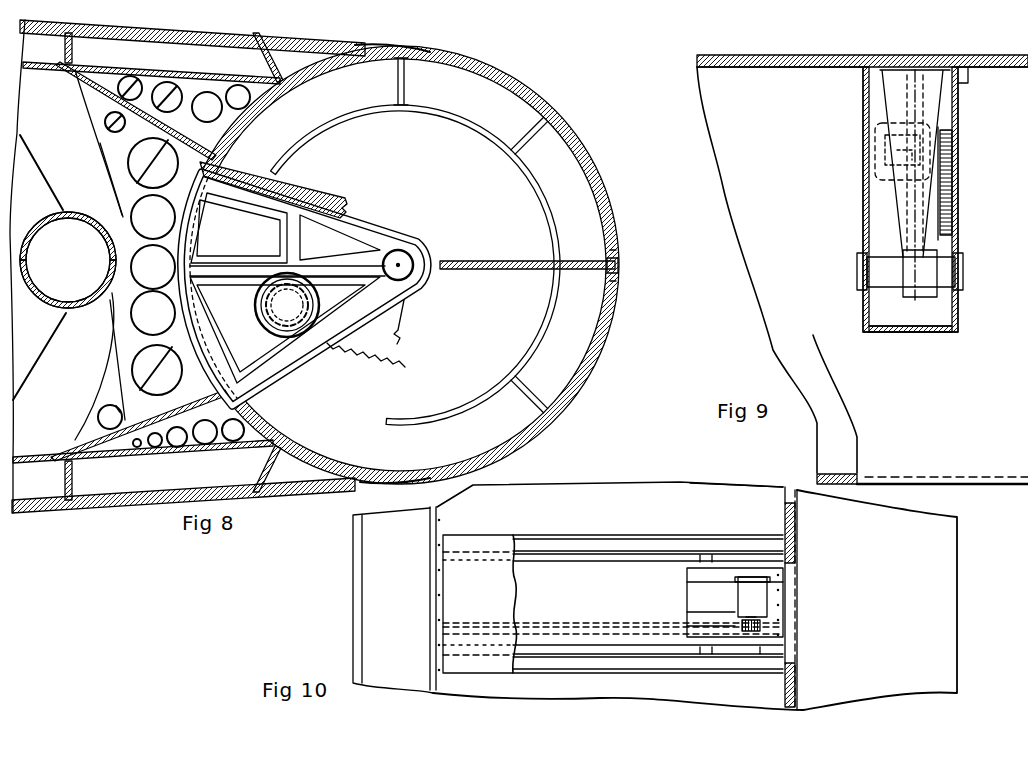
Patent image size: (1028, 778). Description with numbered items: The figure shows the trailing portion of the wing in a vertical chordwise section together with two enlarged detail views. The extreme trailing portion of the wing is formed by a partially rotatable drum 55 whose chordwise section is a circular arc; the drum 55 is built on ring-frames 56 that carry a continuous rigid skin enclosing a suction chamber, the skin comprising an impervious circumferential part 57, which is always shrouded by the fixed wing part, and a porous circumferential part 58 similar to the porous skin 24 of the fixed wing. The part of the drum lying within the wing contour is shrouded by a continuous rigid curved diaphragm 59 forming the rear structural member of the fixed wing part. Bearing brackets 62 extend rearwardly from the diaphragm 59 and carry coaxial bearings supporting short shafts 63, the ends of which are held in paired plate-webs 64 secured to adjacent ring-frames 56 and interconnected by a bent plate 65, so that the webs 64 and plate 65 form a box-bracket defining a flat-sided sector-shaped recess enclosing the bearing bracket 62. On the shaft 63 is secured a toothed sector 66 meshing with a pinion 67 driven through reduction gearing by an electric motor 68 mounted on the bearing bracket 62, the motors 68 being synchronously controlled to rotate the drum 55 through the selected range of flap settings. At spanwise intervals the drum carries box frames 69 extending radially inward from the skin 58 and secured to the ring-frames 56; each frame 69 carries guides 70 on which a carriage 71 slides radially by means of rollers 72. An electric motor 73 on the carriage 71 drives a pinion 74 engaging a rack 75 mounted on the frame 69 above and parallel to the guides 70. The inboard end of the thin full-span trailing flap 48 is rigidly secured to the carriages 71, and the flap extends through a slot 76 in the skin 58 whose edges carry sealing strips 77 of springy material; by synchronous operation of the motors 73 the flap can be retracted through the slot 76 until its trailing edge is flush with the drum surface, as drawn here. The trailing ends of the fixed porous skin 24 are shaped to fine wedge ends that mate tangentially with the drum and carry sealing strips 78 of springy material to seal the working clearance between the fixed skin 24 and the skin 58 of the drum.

In FIG. 8, the porous skin 24 is at (355, 40).
In FIG. 8, the trailing flap 48 is at (465, 258).
In FIG. 10, the trailing flap 48 is at (930, 552).
In FIG. 8, the drum 55 is at (598, 152).
In FIG. 8, the ring-frames 56 is at (333, 133).
In FIG. 10, the ring-frames 56 is at (437, 518).
In FIG. 9, the impervious circumferential skin part 57 is at (790, 69).
In FIG. 8, the porous circumferential skin part 58 is at (530, 102).
In FIG. 10, the porous circumferential skin part 58 is at (785, 518).
In FIG. 8, the curved diaphragm 59 is at (187, 328).
In FIG. 9, the curved diaphragm 59 is at (795, 56).
In FIG. 8, the bearing bracket 62 is at (245, 267).
In FIG. 9, the bearing bracket 62 is at (932, 80).
In FIG. 9, the short shaft 63 is at (872, 268).
In FIG. 9, the plate-webs 64 is at (862, 213).
In FIG. 8, the bent plate 65 is at (377, 213).
In FIG. 9, the bent plate 65 is at (903, 317).
In FIG. 8, the toothed sector 66 is at (395, 337).
In FIG. 9, the toothed sector 66 is at (958, 190).
In FIG. 8, the pinion 67 is at (282, 313).
In FIG. 9, the pinion 67 is at (955, 148).
In FIG. 8, the electric motor 68 is at (255, 306).
In FIG. 9, the electric motor 68 is at (875, 140).
In FIG. 10, the box frame 69 is at (560, 535).
In FIG. 10, the guides 70 is at (625, 561).
In FIG. 10, the carriage 71 is at (697, 595).
In FIG. 10, the rollers 72 is at (700, 555).
In FIG. 10, the electric motor 73 is at (740, 604).
In FIG. 10, the pinion 74 is at (745, 625).
In FIG. 10, the rack 75 is at (612, 625).
In FIG. 8, the slot 76 is at (613, 273).
In FIG. 8, the sealing strips 77 is at (620, 260).
In FIG. 8, the sealing strips 78 is at (417, 53).